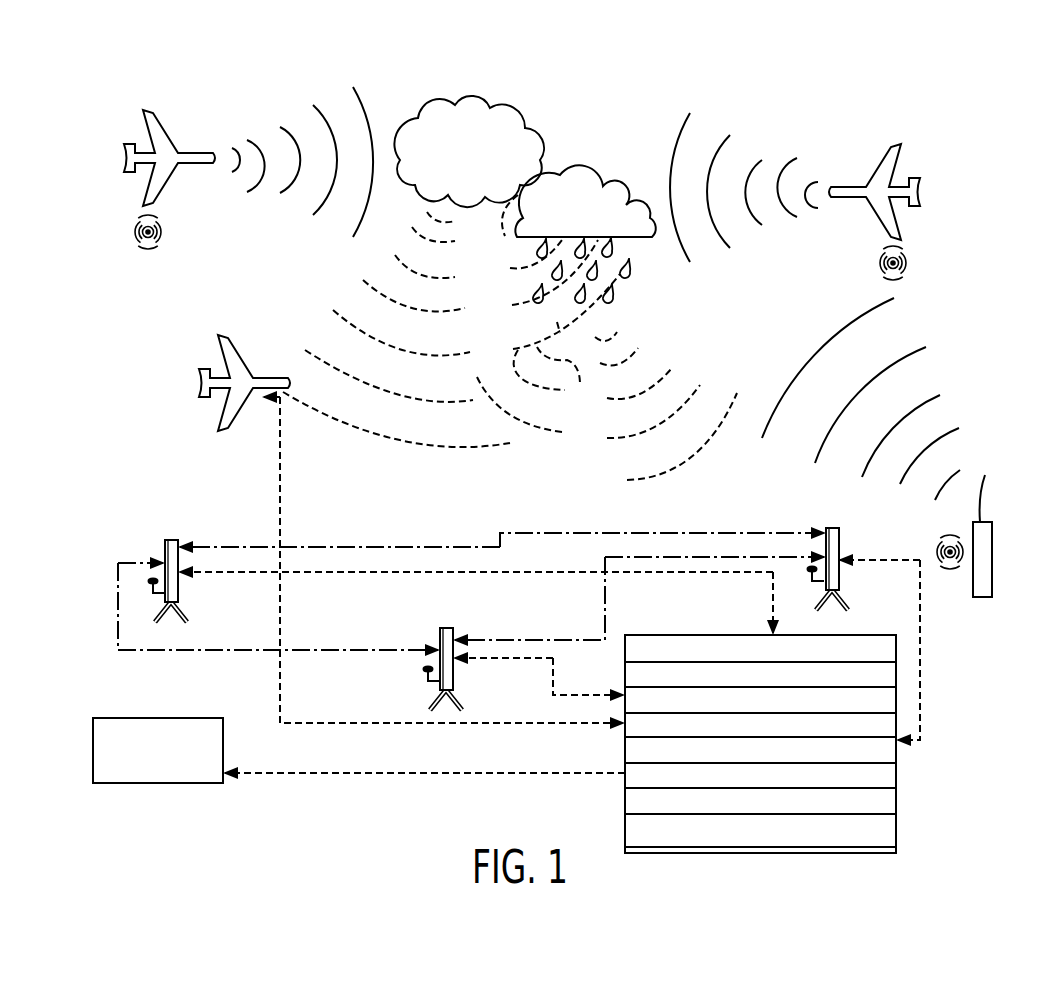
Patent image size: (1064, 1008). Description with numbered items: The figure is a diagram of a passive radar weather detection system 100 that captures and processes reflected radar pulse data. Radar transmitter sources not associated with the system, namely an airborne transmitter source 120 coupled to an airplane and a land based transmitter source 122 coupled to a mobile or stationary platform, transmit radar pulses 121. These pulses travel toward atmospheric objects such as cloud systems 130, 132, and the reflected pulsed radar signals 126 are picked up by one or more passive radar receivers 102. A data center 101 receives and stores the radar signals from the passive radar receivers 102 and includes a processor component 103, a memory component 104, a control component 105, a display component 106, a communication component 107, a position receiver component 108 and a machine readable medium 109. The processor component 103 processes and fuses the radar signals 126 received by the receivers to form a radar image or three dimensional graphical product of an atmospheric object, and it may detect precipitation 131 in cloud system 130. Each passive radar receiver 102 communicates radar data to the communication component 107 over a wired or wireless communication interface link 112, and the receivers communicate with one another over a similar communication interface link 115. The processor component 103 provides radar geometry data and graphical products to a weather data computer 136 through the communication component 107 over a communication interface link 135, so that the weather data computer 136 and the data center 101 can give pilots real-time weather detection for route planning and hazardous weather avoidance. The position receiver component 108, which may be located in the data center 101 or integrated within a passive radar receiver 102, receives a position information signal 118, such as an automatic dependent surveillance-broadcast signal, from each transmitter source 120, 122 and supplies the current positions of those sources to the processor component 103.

The passive radar weather detection system 100 is at (980, 170).
The data center 101 is at (672, 642).
The passive radar receiver 102 is at (224, 335).
The processor component 103 is at (626, 680).
The memory component 104 is at (625, 700).
The control component 105 is at (625, 725).
The display component 106 is at (625, 750).
The communication component 107 is at (625, 775).
The position receiver component 108 is at (155, 594).
The machine readable medium 109 is at (627, 830).
The communication interface link 112 is at (284, 492).
The communication interface link 115 is at (120, 560).
The position information signal 118 is at (162, 230).
The airborne transmitter source 120 is at (150, 110).
The radar pulses 121 is at (288, 131).
The land based transmitter source 122 is at (993, 532).
The radar signals 126 is at (369, 279).
The cloud system 130 is at (607, 181).
The precipitation 131 is at (626, 268).
The cloud system 132 is at (500, 113).
The communication interface link 135 is at (352, 776).
The weather data computer 136 is at (180, 784).